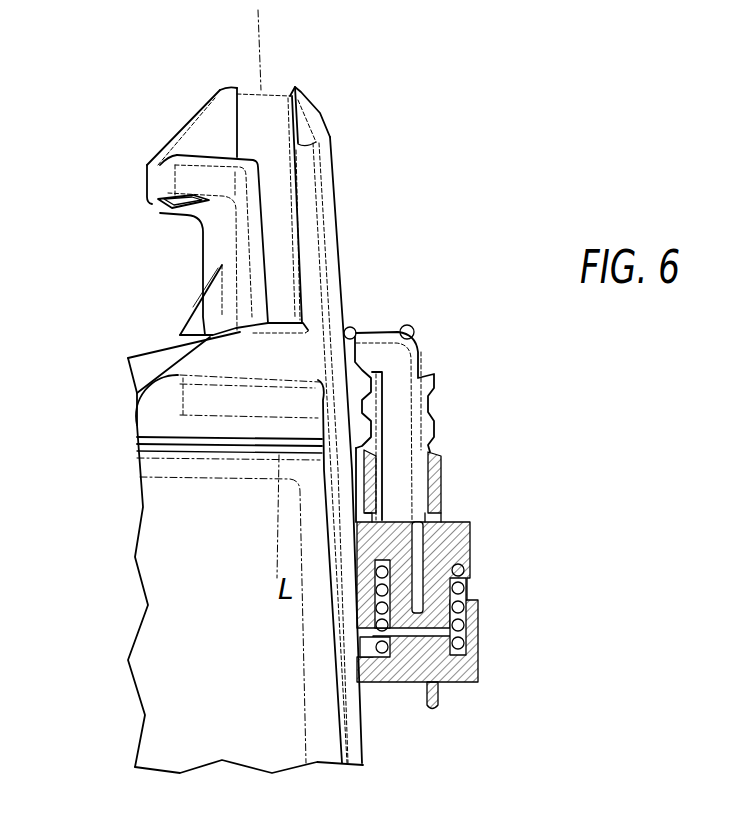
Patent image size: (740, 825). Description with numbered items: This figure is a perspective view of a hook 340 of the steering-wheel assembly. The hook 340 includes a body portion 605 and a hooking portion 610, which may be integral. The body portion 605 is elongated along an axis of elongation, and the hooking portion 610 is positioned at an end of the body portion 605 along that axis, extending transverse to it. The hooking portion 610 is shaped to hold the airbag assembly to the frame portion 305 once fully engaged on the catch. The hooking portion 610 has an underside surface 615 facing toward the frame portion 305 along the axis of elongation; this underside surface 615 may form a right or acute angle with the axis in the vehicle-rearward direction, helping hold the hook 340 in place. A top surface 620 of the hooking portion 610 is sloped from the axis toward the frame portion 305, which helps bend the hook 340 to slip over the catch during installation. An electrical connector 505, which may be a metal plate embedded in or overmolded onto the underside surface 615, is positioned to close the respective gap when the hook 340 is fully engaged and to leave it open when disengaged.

The hooking portion 610 is at (217, 118).
The top surface 620 is at (180, 128).
The underside surface 615 is at (150, 208).
The electrical connector 505 is at (178, 220).
The body portion 605 is at (282, 247).
The hook 340 is at (372, 122).
The frame portion 305 is at (246, 396).